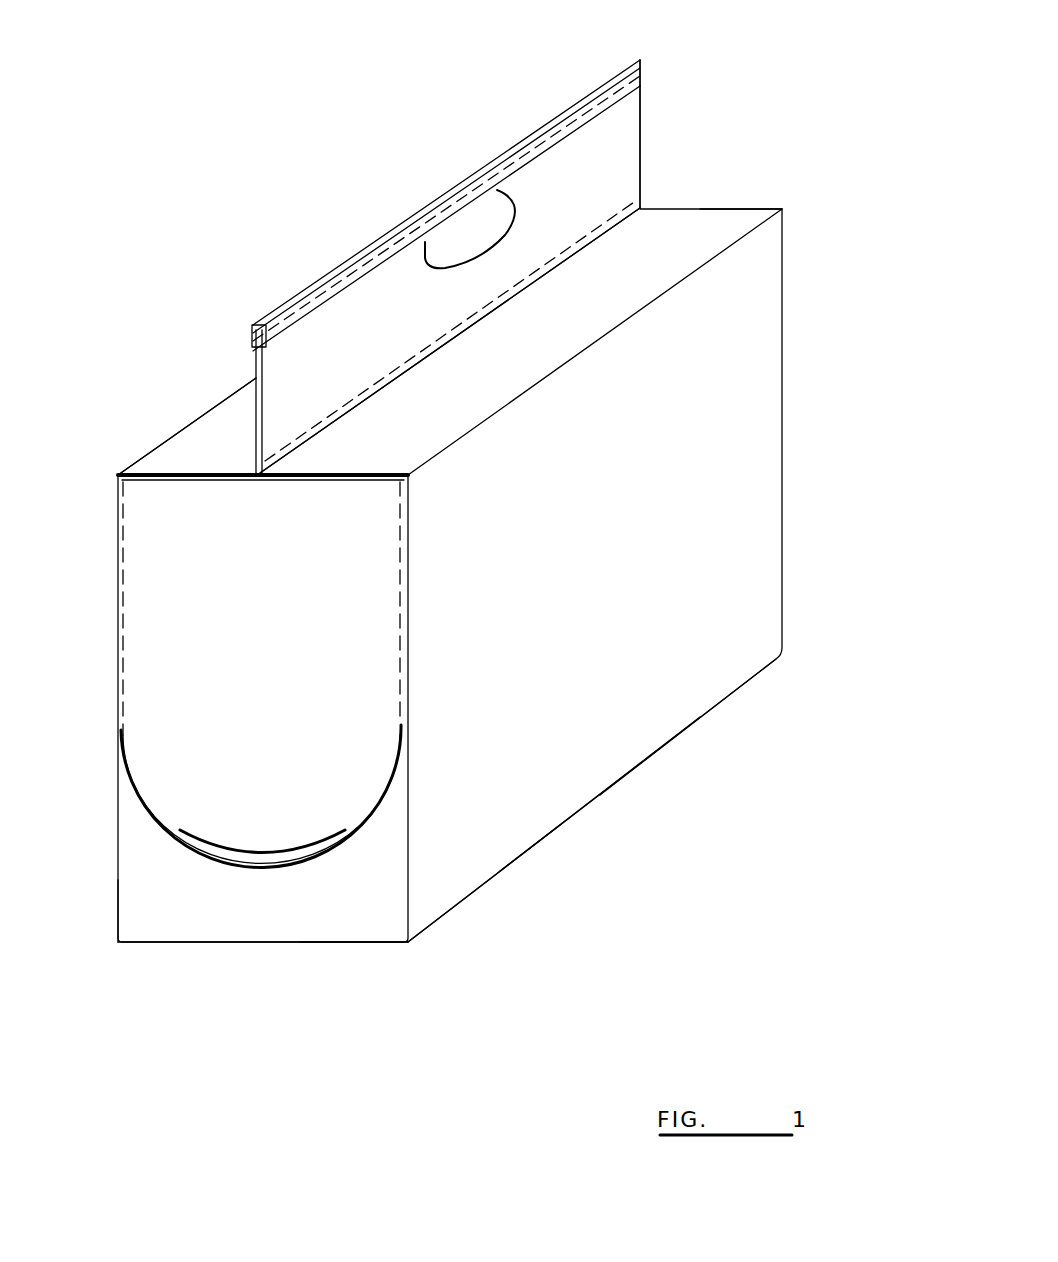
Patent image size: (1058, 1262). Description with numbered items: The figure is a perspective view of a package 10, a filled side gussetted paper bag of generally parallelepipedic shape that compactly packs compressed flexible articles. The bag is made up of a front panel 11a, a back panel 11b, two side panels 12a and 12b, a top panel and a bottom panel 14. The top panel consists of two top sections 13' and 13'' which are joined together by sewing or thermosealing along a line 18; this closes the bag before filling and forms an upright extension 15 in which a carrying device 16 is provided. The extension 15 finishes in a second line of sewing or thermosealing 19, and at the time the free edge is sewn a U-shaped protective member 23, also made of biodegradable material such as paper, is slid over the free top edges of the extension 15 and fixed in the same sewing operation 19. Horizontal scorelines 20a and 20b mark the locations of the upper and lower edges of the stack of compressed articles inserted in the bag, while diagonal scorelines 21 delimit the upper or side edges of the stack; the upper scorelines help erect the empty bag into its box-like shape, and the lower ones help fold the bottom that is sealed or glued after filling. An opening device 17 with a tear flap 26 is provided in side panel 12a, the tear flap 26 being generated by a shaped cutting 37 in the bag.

The package 10 is at (800, 484).
The front panel 11a is at (524, 823).
The back panel 11b is at (168, 438).
The side panel 12a is at (182, 925).
The side panel 12b is at (750, 307).
The top section 13' is at (544, 293).
The top section 13'' is at (187, 406).
The bottom panel 14 is at (681, 715).
The extension 15 is at (627, 117).
The carrying device 16 is at (465, 242).
The opening device 17 is at (170, 672).
The line 18 is at (640, 188).
The line of sewing or thermosealing 19 is at (640, 76).
The horizontal scoreline 20a is at (782, 212).
The horizontal scoreline 20b is at (628, 773).
The diagonal scorelines 21 is at (720, 209).
The U-shaped protective member 23 is at (632, 62).
The tear flap 26 is at (193, 815).
The shaped cutting 37 is at (277, 873).